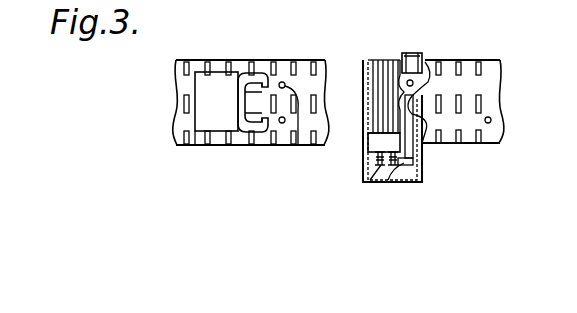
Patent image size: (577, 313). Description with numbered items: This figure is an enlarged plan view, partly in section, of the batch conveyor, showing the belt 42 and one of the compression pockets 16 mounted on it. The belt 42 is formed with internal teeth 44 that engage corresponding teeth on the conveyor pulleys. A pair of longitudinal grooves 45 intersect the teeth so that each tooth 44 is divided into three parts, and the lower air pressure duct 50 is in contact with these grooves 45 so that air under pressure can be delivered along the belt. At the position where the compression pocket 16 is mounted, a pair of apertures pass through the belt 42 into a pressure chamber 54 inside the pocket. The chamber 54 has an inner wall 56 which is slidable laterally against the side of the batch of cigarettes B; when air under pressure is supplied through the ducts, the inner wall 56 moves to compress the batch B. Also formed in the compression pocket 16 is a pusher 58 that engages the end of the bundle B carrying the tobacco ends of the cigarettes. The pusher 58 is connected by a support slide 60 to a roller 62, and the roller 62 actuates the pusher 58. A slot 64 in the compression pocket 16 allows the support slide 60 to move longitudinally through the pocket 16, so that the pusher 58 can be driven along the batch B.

The compression pocket 16 is at (422, 176).
The belt 42 is at (200, 60).
The internal teeth 44 is at (313, 61).
The longitudinal grooves 45 is at (180, 87).
The lower air pressure duct 50 is at (200, 131).
The pressure chamber 54 is at (413, 150).
The inner wall 56 is at (400, 107).
The pusher 58 is at (362, 152).
The support slide 60 is at (372, 181).
The roller 62 is at (392, 170).
The slot 64 is at (386, 166).
The batch of cigarettes B is at (372, 60).